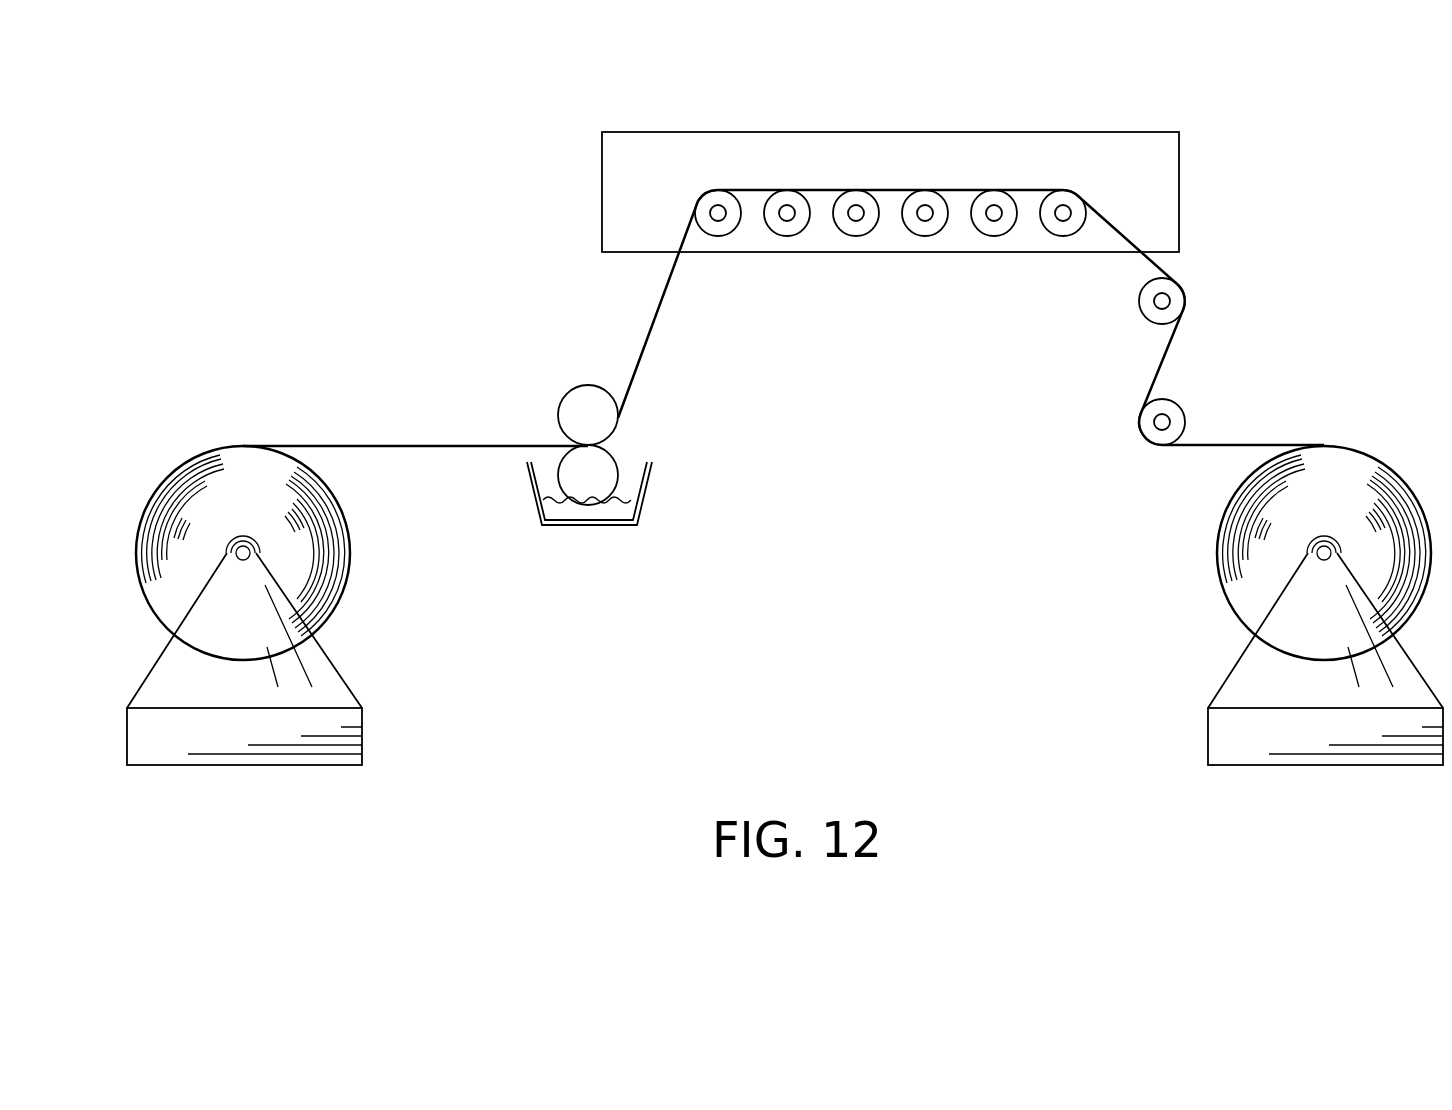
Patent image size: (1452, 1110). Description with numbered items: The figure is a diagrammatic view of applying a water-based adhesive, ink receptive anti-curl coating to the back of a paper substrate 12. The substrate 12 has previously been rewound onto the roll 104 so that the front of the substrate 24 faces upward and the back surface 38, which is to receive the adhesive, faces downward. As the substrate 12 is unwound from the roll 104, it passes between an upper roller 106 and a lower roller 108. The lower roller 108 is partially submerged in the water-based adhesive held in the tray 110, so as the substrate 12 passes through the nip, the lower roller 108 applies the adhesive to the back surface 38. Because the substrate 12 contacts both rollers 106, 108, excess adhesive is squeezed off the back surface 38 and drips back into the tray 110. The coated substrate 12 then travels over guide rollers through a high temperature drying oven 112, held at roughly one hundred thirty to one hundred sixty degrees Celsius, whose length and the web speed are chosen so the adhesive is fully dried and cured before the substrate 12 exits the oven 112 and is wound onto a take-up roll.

The roll 104 is at (238, 478).
The substrate 12 is at (335, 445).
The front of the substrate 24 is at (412, 421).
The back surface 38 is at (414, 465).
The upper roller 106 is at (583, 405).
The lower roller 108 is at (580, 475).
The tray 110 is at (590, 527).
The drying oven 112 is at (853, 131).